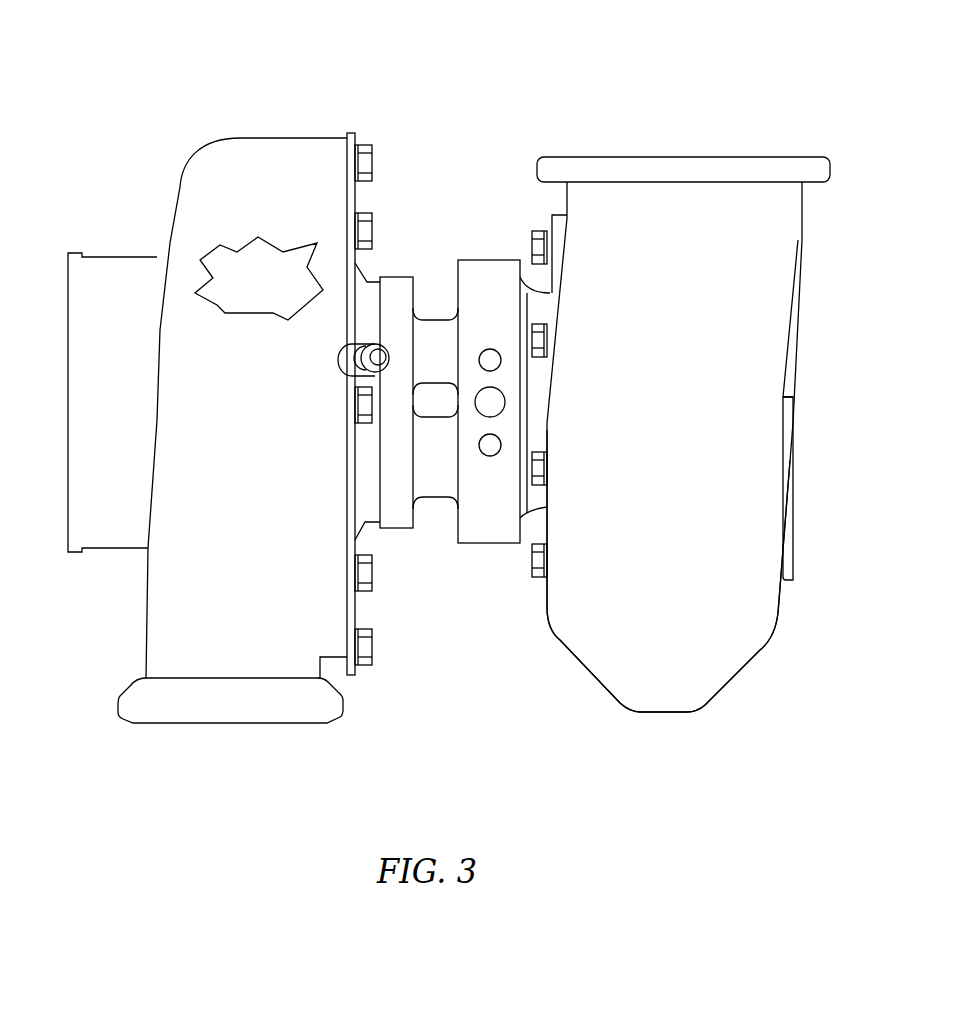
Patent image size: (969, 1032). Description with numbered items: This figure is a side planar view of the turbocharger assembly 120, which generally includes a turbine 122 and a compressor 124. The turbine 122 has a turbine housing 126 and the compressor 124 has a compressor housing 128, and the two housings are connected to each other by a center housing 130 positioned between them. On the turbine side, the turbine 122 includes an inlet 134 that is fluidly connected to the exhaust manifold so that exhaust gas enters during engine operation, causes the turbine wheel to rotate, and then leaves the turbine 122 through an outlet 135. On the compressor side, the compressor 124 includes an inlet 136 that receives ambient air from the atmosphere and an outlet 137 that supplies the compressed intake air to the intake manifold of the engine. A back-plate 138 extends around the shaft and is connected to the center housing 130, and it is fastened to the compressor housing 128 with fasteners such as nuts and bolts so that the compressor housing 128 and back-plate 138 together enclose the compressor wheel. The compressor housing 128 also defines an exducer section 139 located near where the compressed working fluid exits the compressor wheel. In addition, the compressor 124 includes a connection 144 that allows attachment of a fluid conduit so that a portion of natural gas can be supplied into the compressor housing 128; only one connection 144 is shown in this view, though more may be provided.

The turbocharger assembly 120 is at (741, 88).
The turbine 122 is at (773, 277).
The compressor 124 is at (192, 192).
The turbine housing 126 is at (680, 462).
The compressor housing 128 is at (255, 447).
The center housing 130 is at (493, 273).
The inlet 134 is at (797, 427).
The outlet 135 is at (633, 157).
The inlet 136 is at (67, 525).
The outlet 137 is at (240, 725).
The back-plate 138 is at (370, 296).
The exducer section 139 is at (275, 296).
The connection 144 is at (382, 367).